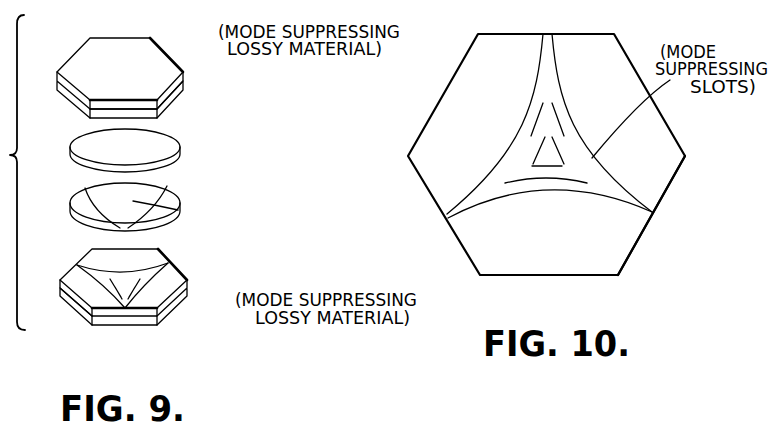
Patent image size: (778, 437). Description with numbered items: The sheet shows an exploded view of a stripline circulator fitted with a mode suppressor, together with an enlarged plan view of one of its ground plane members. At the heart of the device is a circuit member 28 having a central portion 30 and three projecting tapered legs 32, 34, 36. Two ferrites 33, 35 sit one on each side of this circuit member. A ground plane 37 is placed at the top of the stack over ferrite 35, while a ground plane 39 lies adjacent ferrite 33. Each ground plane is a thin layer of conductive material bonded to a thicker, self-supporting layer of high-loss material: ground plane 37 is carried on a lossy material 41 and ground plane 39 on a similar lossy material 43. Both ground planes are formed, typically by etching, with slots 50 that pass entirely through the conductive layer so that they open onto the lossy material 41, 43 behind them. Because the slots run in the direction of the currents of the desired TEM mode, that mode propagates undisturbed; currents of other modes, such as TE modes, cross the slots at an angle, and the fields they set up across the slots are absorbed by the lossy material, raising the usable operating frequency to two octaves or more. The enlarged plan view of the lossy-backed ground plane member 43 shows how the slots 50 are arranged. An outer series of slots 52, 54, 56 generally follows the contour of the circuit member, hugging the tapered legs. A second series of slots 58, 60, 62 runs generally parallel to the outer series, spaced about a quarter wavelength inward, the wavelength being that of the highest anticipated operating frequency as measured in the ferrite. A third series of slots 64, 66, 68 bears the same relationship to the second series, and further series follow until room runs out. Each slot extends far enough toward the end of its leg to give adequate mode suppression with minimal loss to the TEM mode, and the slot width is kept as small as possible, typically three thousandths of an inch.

In FIG. 9, the circuit member 28 is at (135, 195).
In FIG. 9, the central portion 30 is at (135, 203).
In FIG. 9, the projecting tapered leg 32 is at (166, 190).
In FIG. 9, the ferrite 33 is at (165, 228).
In FIG. 9, the projecting tapered leg 34 is at (121, 226).
In FIG. 9, the ferrite 35 is at (82, 145).
In FIG. 9, the projecting tapered leg 36 is at (90, 191).
In FIG. 9, the ground plane 37 is at (173, 99).
In FIG. 9, the ground plane 39 is at (173, 279).
In FIG. 9, the lossy material 41 is at (157, 62).
In FIG. 9, the lossy material 43 is at (175, 301).
In FIG. 10, the lossy material 43 is at (663, 168).
In FIG. 9, the slots 50 is at (80, 296).
In FIG. 10, the slots 50 is at (632, 213).
In FIG. 10, the outer slot 52 is at (587, 186).
In FIG. 10, the outer slot 54 is at (563, 100).
In FIG. 10, the outer slot 56 is at (533, 104).
In FIG. 10, the second-series slot 58 is at (507, 184).
In FIG. 10, the second-series slot 60 is at (558, 120).
In FIG. 10, the second-series slot 62 is at (532, 133).
In FIG. 10, the third-series slot 64 is at (552, 166).
In FIG. 10, the third-series slot 66 is at (556, 148).
In FIG. 10, the third-series slot 68 is at (533, 157).